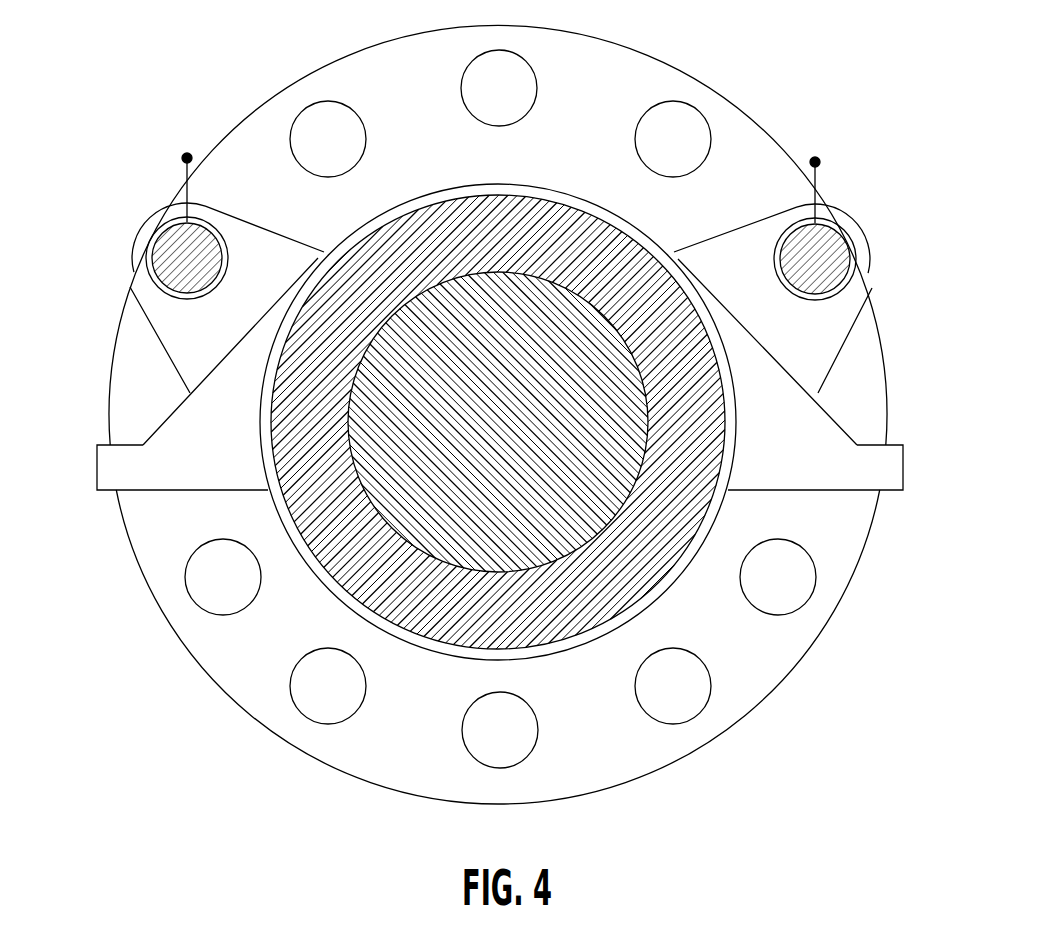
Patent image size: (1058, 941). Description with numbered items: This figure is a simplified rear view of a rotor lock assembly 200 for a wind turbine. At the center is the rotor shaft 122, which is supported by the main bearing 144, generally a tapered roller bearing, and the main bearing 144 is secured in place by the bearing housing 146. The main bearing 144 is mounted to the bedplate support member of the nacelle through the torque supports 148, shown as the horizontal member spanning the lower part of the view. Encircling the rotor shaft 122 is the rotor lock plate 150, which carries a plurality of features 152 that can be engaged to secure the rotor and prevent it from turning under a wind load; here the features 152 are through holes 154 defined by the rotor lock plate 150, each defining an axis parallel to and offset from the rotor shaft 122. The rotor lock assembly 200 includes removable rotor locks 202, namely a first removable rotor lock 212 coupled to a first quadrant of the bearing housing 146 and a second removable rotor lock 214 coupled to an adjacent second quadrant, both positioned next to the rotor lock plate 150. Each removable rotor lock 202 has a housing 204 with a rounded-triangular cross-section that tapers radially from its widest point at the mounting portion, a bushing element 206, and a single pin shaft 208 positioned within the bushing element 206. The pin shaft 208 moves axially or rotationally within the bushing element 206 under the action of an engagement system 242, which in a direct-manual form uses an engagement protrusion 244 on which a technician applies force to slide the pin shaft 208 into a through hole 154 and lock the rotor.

The rotor shaft 122 is at (582, 522).
The main bearing 144 is at (621, 253).
The bearing housing 146 is at (553, 188).
The torque support 148 is at (103, 457).
The rotor lock plate 150 is at (595, 50).
The features 152 is at (500, 393).
The through holes 154 is at (317, 117).
The rotor lock assembly 200 is at (793, 72).
The removable rotor lock 202 is at (493, 292).
The housing 204 is at (170, 332).
The bushing element 206 is at (500, 245).
The pin shaft 208 is at (170, 267).
The first removable rotor lock 212 is at (907, 170).
The second removable rotor lock 214 is at (117, 245).
The engagement system 242 is at (505, 146).
The engagement protrusion 244 is at (172, 150).